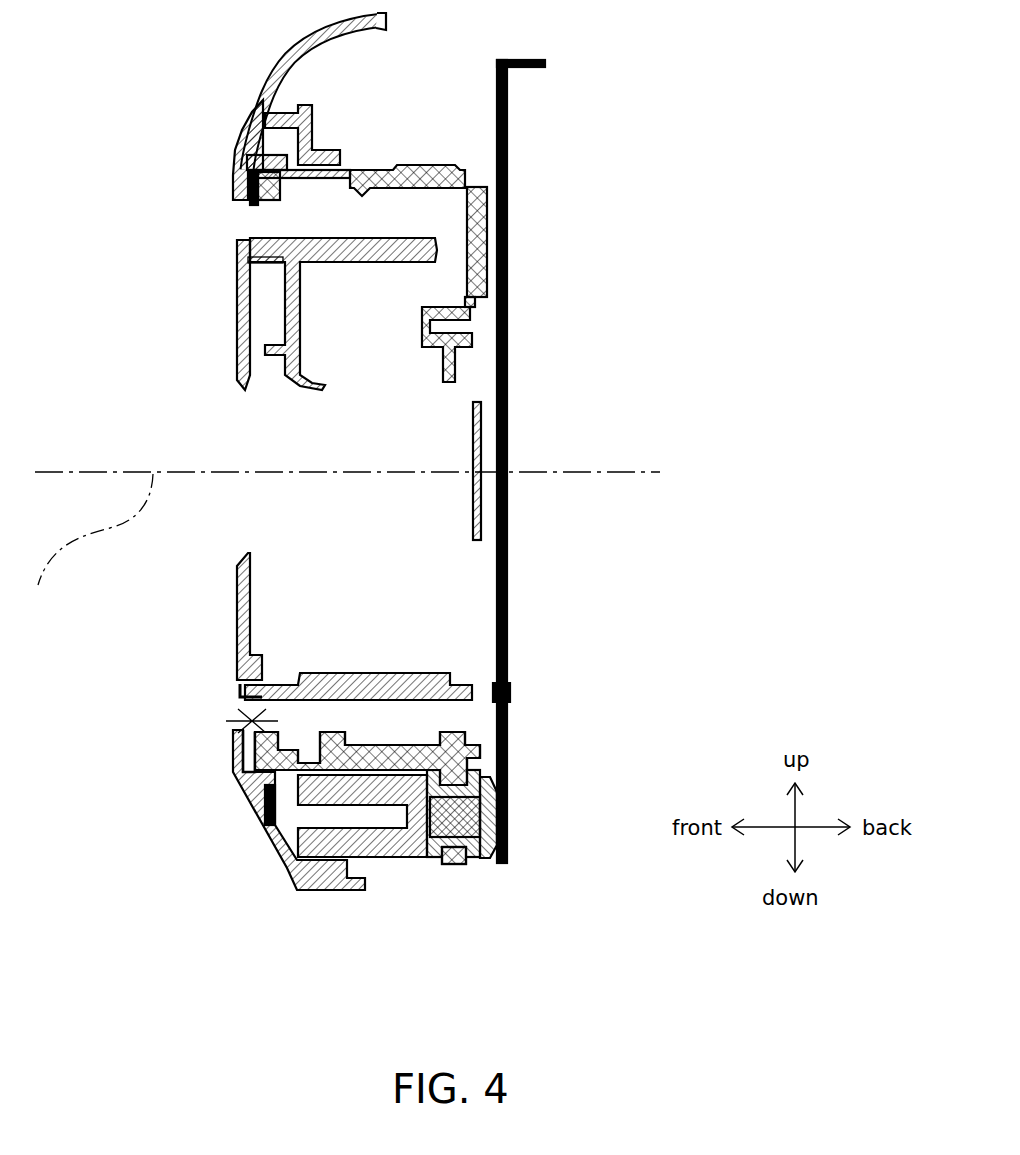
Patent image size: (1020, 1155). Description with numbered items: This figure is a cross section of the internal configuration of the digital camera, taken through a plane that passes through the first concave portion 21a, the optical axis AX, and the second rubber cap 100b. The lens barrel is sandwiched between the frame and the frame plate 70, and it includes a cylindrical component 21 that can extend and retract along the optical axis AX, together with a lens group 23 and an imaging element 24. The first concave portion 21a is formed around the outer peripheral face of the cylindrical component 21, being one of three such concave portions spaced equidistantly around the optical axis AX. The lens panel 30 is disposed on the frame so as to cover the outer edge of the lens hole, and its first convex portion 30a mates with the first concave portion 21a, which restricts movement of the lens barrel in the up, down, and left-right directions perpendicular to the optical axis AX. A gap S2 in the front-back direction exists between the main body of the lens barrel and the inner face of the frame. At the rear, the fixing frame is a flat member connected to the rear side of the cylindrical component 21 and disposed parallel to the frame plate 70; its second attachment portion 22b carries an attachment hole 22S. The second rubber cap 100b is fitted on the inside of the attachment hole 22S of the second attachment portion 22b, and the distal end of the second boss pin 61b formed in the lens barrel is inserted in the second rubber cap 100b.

The first convex portion 30a is at (246, 142).
The first concave portion 21a is at (257, 212).
The lens group 23 is at (236, 345).
The imaging element 24 is at (482, 442).
The frame plate 70 is at (507, 603).
The optical axis AX is at (338, 550).
The gap S2 is at (252, 712).
The cylindrical component 21 is at (245, 730).
The lens panel 30 is at (240, 792).
The second boss pin 61b is at (375, 840).
The second rubber cap 100b is at (495, 822).
The second attachment portion 22b is at (480, 748).
The attachment hole 22S is at (495, 843).